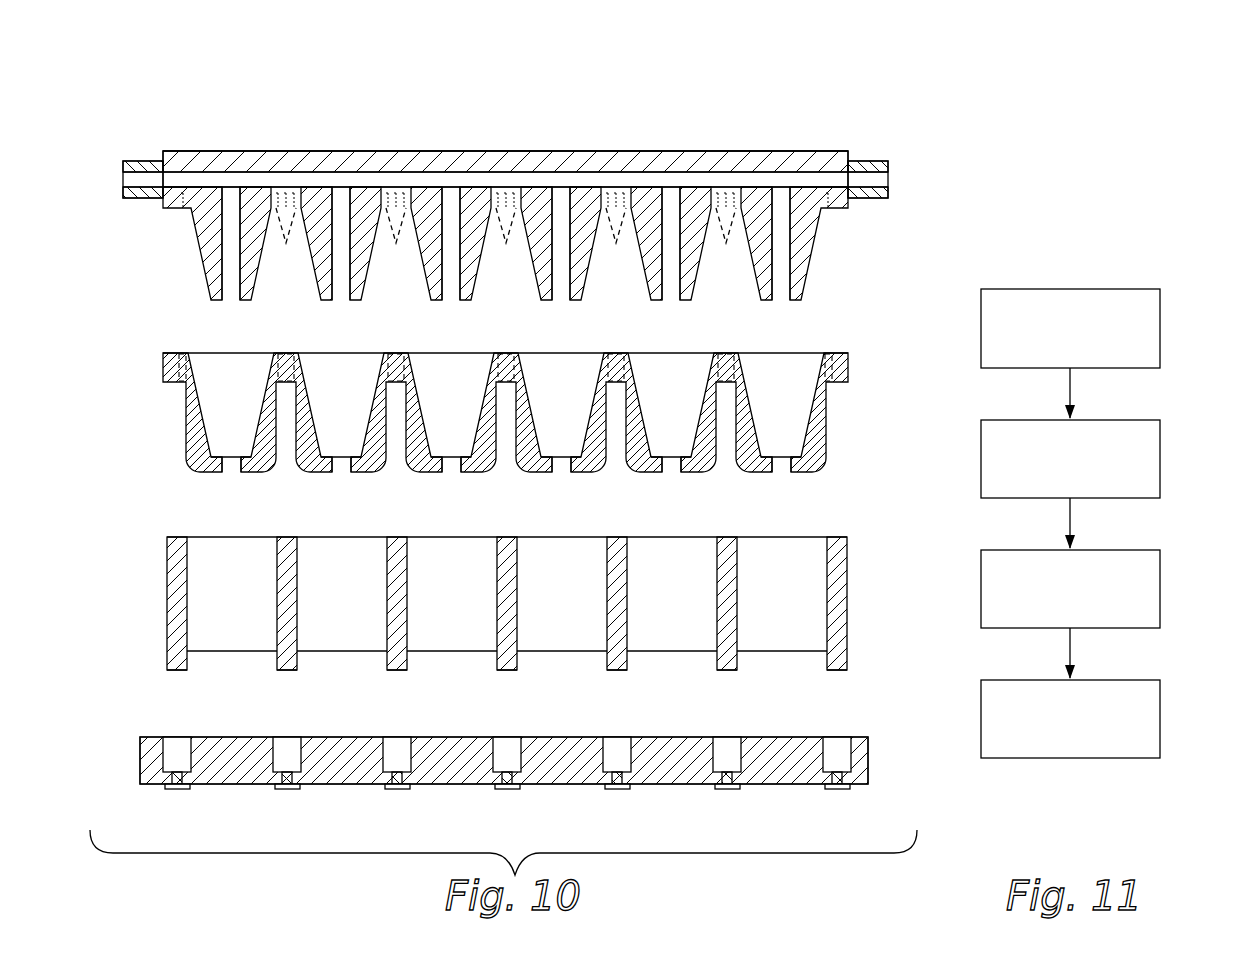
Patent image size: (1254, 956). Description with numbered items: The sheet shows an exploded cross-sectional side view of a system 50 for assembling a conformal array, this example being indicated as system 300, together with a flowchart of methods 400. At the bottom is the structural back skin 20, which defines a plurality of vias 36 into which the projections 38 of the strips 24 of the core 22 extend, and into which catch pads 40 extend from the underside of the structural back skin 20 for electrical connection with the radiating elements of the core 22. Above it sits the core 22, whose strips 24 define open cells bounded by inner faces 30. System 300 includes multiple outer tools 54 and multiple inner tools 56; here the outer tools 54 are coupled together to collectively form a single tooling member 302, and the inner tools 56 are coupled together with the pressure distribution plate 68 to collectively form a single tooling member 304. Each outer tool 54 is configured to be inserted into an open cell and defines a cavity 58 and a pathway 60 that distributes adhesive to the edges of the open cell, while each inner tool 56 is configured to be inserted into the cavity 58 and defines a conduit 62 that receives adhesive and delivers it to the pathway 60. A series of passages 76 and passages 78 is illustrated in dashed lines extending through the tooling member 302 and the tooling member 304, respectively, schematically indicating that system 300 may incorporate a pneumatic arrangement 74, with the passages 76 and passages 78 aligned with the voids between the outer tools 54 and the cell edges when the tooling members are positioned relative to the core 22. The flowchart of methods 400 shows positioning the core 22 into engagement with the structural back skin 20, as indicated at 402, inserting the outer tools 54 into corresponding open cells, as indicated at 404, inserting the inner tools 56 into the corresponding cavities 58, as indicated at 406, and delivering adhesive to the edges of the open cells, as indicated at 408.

In FIG. 10, the structural back skin 20 is at (139, 763).
In FIG. 10, the core 22 is at (158, 613).
In FIG. 10, the strips 24 is at (180, 533).
In FIG. 10, the inner faces 30 is at (221, 609).
In FIG. 10, the vias 36 is at (190, 750).
In FIG. 10, the projections 38 is at (175, 673).
In FIG. 10, the catch pads 40 is at (174, 790).
In FIG. 10, the system 50 is at (855, 114).
In FIG. 10, the outer tool 54 is at (187, 448).
In FIG. 10, the inner tool 56 is at (203, 262).
In FIG. 10, the cavity 58 is at (264, 402).
In FIG. 10, the pathway 60 is at (238, 463).
In FIG. 10, the conduit 62 is at (223, 286).
In FIG. 10, the pressure distribution plate 68 is at (636, 150).
In FIG. 10, the pneumatic arrangement 74 is at (456, 150).
In FIG. 10, the passages 76 is at (186, 352).
In FIG. 10, the passages 78 is at (183, 207).
In FIG. 10, the system 300 is at (742, 128).
In FIG. 10, the tooling member 302 is at (160, 377).
In FIG. 10, the tooling member 304 is at (290, 145).
In FIG. 11, the methods 400 is at (1093, 224).
In FIG. 11, the positioning step 402 is at (1141, 289).
In FIG. 11, the inserting outer tools step 404 is at (1141, 420).
In FIG. 11, the inserting inner tools step 406 is at (1141, 550).
In FIG. 11, the delivering adhesive step 408 is at (1141, 680).